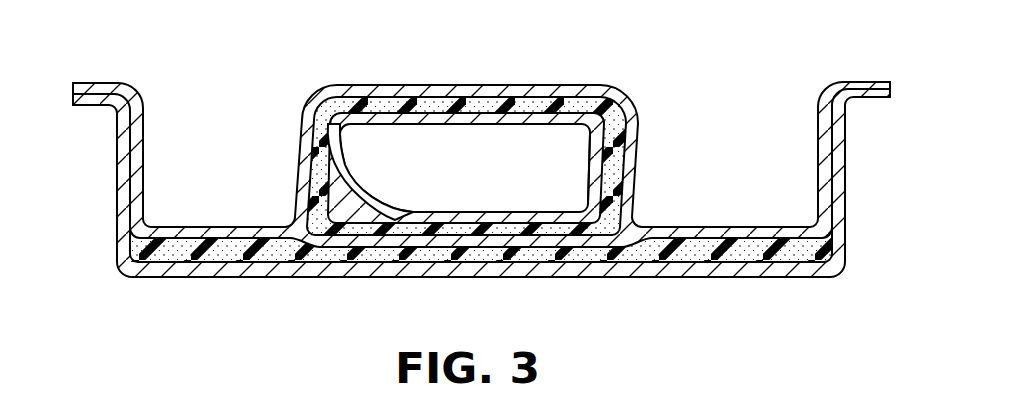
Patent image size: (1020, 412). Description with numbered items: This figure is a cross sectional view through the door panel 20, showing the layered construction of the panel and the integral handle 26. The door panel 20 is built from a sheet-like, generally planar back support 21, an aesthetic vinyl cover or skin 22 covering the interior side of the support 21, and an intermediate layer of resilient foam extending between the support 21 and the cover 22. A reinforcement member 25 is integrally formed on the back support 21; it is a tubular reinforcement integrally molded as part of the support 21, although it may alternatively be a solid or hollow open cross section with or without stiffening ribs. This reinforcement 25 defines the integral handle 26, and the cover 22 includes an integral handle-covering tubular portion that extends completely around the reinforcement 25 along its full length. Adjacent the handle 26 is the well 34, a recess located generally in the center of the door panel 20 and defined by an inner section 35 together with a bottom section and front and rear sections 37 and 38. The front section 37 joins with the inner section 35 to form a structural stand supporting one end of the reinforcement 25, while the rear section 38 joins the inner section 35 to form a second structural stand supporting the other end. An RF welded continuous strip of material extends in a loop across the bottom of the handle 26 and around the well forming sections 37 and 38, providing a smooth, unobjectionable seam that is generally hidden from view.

The door panel 20 is at (510, 206).
The back support 21 is at (510, 206).
The cover 22 is at (724, 300).
The reinforcement member 25 is at (403, 242).
The handle 26 is at (586, 292).
The well 34 is at (488, 187).
The inner section 35 is at (458, 126).
The front section 37 is at (347, 163).
The rear section 38 is at (583, 192).